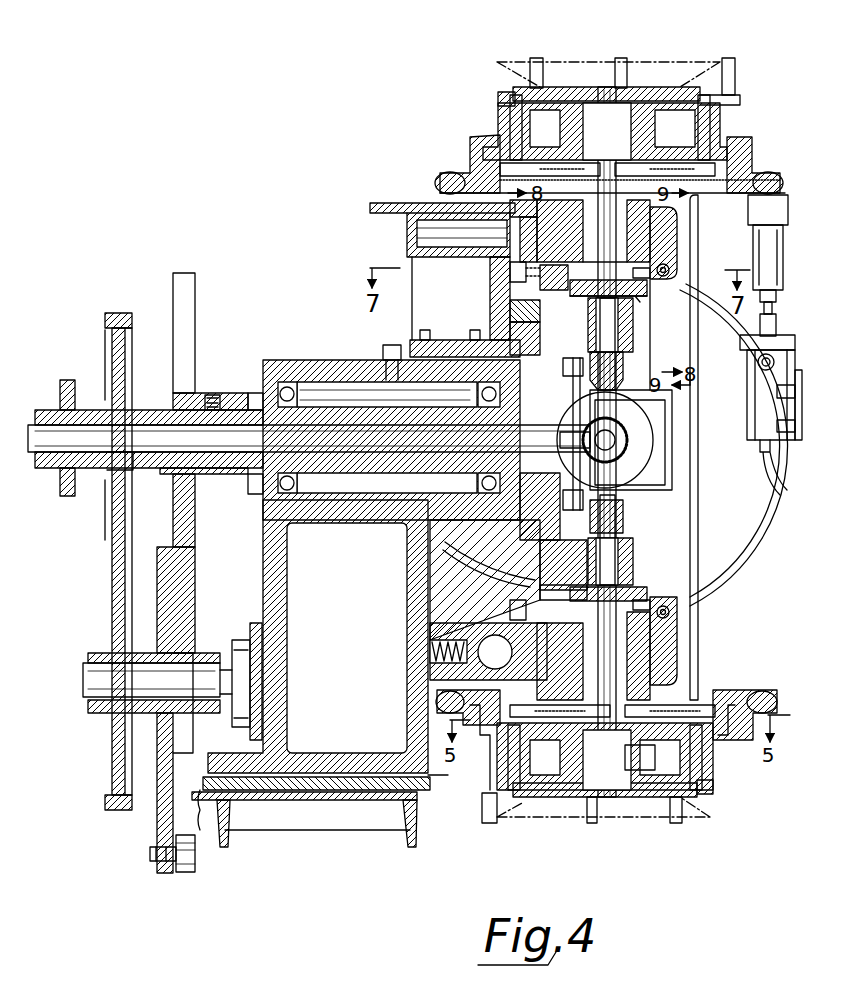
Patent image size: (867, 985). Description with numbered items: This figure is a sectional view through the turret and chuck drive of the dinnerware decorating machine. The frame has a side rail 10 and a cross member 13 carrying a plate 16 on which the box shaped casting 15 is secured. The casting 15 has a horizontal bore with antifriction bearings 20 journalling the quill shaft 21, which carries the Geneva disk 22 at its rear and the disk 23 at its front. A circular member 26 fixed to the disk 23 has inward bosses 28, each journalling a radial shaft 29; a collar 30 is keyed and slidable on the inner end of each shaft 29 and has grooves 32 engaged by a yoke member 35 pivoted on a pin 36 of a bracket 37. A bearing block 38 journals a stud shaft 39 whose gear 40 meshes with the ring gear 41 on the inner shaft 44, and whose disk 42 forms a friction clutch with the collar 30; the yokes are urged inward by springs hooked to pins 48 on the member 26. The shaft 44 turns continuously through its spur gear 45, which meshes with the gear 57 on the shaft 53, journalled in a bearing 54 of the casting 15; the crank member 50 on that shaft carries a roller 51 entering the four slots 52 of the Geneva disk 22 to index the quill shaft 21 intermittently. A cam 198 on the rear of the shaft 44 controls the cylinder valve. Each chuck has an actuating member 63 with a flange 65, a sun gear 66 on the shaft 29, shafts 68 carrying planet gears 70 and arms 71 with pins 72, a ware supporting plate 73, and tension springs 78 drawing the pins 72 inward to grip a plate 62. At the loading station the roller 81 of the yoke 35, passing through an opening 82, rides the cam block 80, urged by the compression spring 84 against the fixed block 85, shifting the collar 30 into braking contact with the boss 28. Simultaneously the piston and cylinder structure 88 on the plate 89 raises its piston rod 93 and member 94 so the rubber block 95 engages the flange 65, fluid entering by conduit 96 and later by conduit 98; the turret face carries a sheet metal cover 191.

The side rail 10 is at (316, 803).
The cross member 13 is at (255, 797).
The box shaped casting 15 is at (265, 555).
The plate 16 is at (440, 776).
The cam 198 is at (63, 380).
The antifriction bearings 20 is at (282, 387).
The quill shaft 21 is at (368, 470).
The Geneva disk 22 is at (196, 509).
The disk 23 is at (522, 515).
The circular member 26 is at (540, 558).
The boss 28 is at (657, 226).
The shaft 29 is at (600, 100).
The collar 30 is at (642, 590).
The grooves 32 is at (650, 602).
The yoke member 35 is at (554, 283).
The pin 36 is at (666, 276).
The bracket 37 is at (680, 248).
The bearing block 38 is at (635, 322).
The stud shaft 39 is at (618, 340).
The gear 40 is at (622, 377).
The ring gear 41 is at (590, 470).
The disk 42 is at (642, 300).
The shaft 44 is at (309, 438).
The spur gear 45 is at (128, 362).
The pins 48 is at (570, 434).
The crank member 50 is at (158, 815).
The roller 51 is at (195, 855).
The slots 52 is at (190, 325).
The shaft 53 is at (151, 683).
The bearing 54 is at (241, 681).
The gear 57 is at (107, 585).
The plate 62 is at (565, 55).
The actuating member 63 is at (650, 764).
The flange 65 is at (438, 180).
The spur gear 66 is at (640, 171).
The shafts 68 is at (498, 122).
The gear 70 is at (495, 740).
The arm 71 is at (497, 97).
The pin 72 is at (537, 57).
The ware supporting plate 73 is at (640, 92).
The tension spring 78 is at (520, 710).
The cam block 80 is at (505, 300).
The roller 81 is at (509, 272).
The opening 82 is at (563, 592).
The compression spring 84 is at (525, 315).
The fixed block 85 is at (520, 325).
The piston and cylinder structure 88 is at (765, 405).
The plate 89 is at (796, 412).
The piston rod 93 is at (773, 297).
The member 94 is at (763, 256).
The rubber block 95 is at (768, 210).
The conduit 96 is at (780, 493).
The conduit 98 is at (758, 365).
The sheet metal cover 191 is at (698, 485).